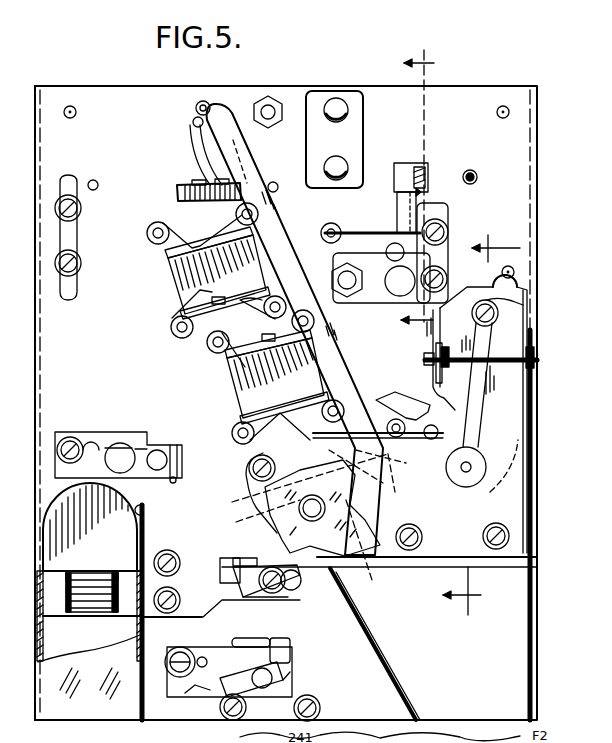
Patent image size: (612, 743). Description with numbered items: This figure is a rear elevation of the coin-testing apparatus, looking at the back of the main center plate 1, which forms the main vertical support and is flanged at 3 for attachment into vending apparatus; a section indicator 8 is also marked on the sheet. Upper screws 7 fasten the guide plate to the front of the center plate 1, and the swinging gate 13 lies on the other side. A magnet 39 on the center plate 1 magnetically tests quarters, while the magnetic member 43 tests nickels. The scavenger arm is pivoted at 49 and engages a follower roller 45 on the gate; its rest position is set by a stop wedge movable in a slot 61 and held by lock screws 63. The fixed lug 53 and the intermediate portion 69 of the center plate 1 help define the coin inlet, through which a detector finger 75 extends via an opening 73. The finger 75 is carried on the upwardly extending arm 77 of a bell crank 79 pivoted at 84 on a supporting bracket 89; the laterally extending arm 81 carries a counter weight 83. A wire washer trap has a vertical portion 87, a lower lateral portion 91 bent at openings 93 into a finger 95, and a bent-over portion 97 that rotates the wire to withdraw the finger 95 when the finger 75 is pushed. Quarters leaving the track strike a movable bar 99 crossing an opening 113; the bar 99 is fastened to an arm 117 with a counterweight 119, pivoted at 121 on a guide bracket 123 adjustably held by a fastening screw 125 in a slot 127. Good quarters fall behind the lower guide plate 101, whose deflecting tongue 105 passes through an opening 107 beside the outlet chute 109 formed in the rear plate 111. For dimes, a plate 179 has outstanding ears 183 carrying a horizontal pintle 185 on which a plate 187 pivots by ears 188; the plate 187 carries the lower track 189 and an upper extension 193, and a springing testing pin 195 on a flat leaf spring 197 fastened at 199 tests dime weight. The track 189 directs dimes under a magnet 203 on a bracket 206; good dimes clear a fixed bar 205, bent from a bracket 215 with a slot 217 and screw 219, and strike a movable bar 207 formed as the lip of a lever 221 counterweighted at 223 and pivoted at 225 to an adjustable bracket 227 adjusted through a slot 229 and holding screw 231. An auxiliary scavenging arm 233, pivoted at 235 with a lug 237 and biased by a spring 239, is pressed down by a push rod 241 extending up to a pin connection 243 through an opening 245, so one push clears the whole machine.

The main center plate 1 is at (143, 95).
The flange 3 is at (35, 131).
The upper screws 7 is at (94, 190).
The section line 8- 8 is at (418, 335).
The swinging gate 13 is at (482, 425).
The magnet 39 is at (190, 283).
The magnetic member 43 is at (250, 393).
The follower roller 45 is at (185, 197).
The pivot 49 is at (270, 121).
The fixed lug 53 is at (307, 97).
The slot 61 is at (70, 177).
The lock screws 63 is at (60, 248).
The intermediate portion of the center plate 69 is at (392, 99).
The opening 73 is at (404, 162).
The detector finger 75 is at (398, 181).
The upwardly extending arm 77 is at (408, 205).
The bell crank 79 is at (395, 251).
The laterally extending arm 81 is at (358, 268).
The counter weight 83 is at (349, 293).
The pivot 84 is at (400, 281).
The vertical portion of wire 87 is at (424, 195).
The supporting bracket 89 is at (445, 256).
The lower lateral portion 91 is at (368, 232).
The openings 93 is at (333, 224).
The finger 95 is at (327, 229).
The bent-over portion 97 is at (420, 170).
The movable bar 99 is at (178, 449).
The lower guide plate 101 is at (62, 514).
The deflecting tongue 105 is at (88, 590).
The opening 107 is at (141, 509).
The outlet chute 109 is at (40, 649).
The plate 111 is at (398, 684).
The opening 113 is at (173, 483).
The arm 117 is at (142, 442).
The counterweight 119 is at (107, 442).
The pivot 121 is at (157, 444).
The guide bracket 123 is at (120, 440).
The fastening screw 125 is at (63, 438).
The slot 127 is at (88, 450).
The plate 179 is at (532, 283).
The outstanding ears 183 is at (535, 352).
The horizontal pintle 185 is at (488, 355).
The plate 187 is at (520, 440).
The ears 188 is at (522, 370).
The lower track 189 is at (379, 541).
The upper extension 193 is at (530, 300).
The springing testing pin 195 is at (488, 471).
The flat leaf spring 197 is at (485, 466).
The fastening 199 is at (535, 322).
The magnet 203 is at (268, 510).
The bar 205 is at (236, 598).
The bracket 206 is at (250, 456).
The movable bar 207 is at (290, 675).
The bracket 215 is at (273, 592).
The slot 217 is at (291, 591).
The screw 219 is at (290, 605).
The lever 221 is at (245, 695).
The counterweight 223 is at (218, 690).
The pivot 225 is at (258, 672).
The adjustable bracket 227 is at (185, 693).
The slot 229 is at (184, 653).
The holding screw 231 is at (165, 664).
The auxiliary scavenging arm 233 is at (258, 504).
The pivot 235 is at (396, 418).
The lug 237 is at (436, 440).
The spring 239 is at (380, 410).
The push rod 241 is at (352, 350).
The pin connection 243 is at (196, 113).
The opening 245 is at (200, 163).